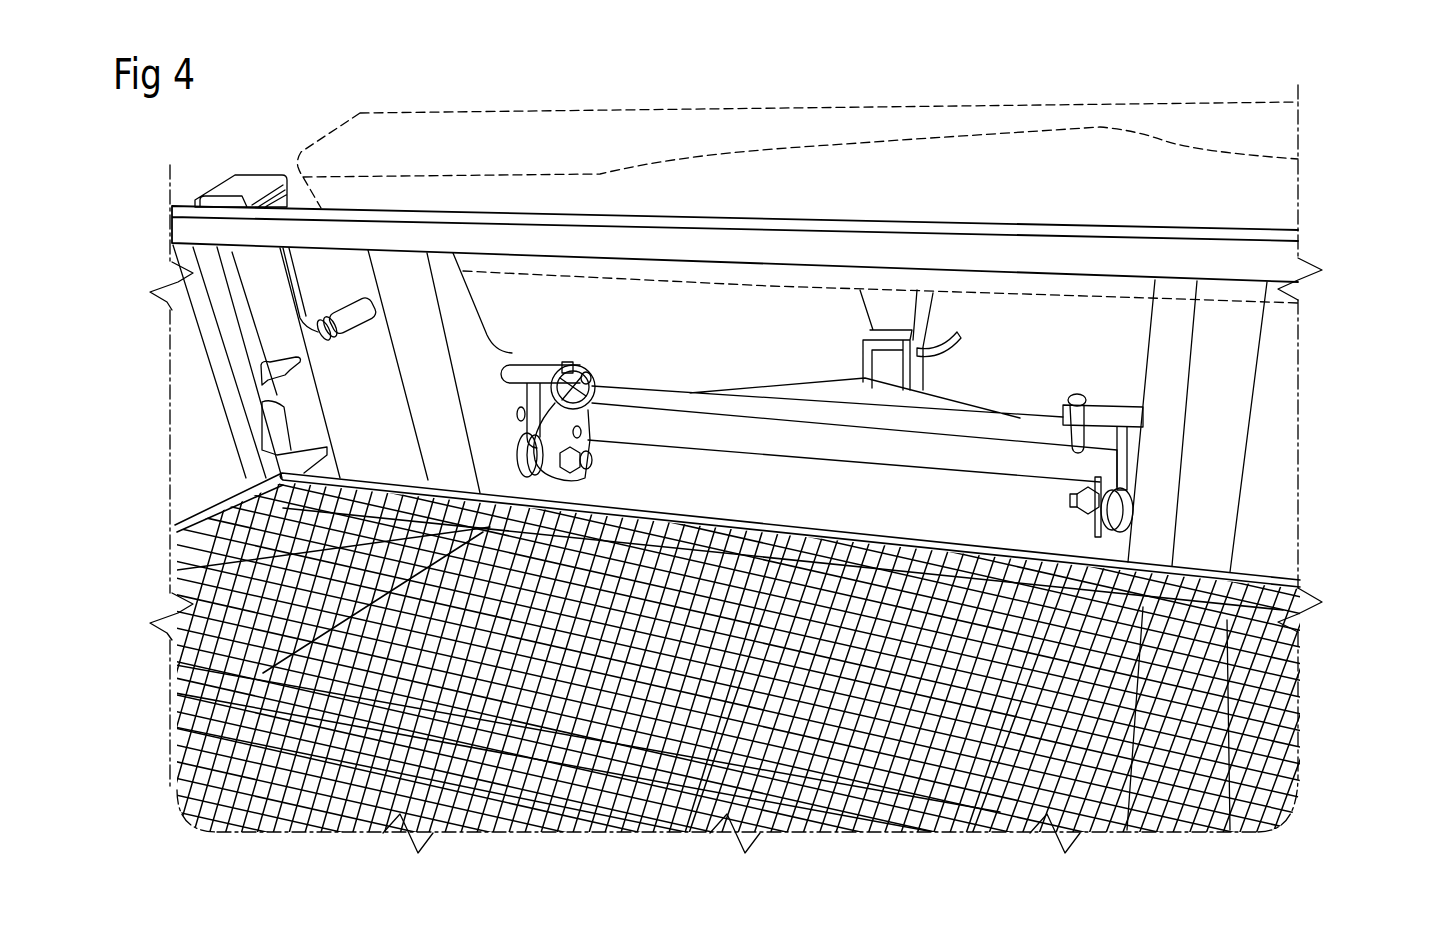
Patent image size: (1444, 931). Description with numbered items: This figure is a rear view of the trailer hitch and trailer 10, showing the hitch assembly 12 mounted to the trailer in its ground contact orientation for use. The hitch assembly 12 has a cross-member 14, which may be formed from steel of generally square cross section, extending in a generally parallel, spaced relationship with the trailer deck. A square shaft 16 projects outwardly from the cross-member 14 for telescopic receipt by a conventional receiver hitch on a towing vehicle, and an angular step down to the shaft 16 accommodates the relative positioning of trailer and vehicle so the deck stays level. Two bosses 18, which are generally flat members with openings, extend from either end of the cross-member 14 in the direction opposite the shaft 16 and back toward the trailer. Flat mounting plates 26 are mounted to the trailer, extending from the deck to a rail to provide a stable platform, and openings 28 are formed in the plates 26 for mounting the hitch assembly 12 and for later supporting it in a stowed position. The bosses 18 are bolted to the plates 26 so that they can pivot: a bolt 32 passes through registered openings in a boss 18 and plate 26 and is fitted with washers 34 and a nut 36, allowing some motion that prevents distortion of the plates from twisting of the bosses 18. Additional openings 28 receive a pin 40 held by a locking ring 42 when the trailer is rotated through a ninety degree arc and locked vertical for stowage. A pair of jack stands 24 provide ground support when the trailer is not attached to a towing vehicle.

The trailer hitch and trailer 10 is at (1340, 310).
The hitch assembly 12 is at (745, 315).
The cross-member 14 is at (678, 398).
The square shaft 16 is at (882, 375).
The bosses 18 is at (553, 422).
The jack stands 24 is at (268, 160).
The flat mounting plates 26 is at (470, 373).
The openings 28 is at (515, 410).
The bolt 32 is at (1075, 503).
The washers 34 is at (1100, 477).
The nut 36 is at (1088, 514).
The pin 40 is at (1118, 408).
The locking ring 42 is at (1078, 400).